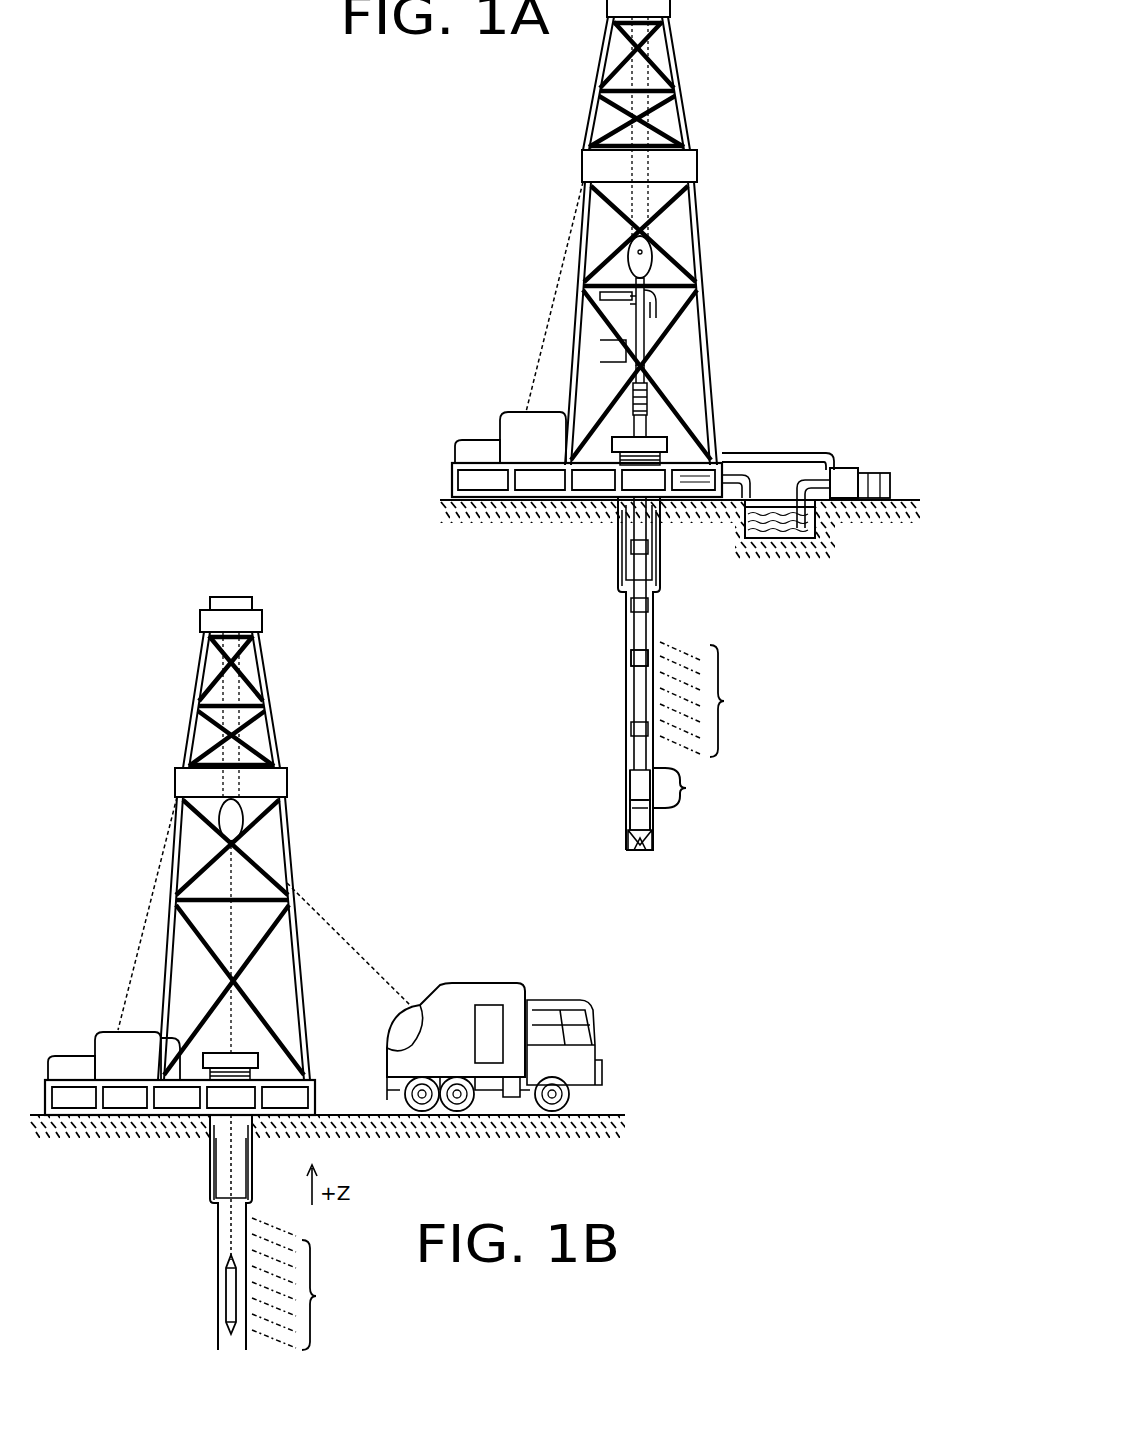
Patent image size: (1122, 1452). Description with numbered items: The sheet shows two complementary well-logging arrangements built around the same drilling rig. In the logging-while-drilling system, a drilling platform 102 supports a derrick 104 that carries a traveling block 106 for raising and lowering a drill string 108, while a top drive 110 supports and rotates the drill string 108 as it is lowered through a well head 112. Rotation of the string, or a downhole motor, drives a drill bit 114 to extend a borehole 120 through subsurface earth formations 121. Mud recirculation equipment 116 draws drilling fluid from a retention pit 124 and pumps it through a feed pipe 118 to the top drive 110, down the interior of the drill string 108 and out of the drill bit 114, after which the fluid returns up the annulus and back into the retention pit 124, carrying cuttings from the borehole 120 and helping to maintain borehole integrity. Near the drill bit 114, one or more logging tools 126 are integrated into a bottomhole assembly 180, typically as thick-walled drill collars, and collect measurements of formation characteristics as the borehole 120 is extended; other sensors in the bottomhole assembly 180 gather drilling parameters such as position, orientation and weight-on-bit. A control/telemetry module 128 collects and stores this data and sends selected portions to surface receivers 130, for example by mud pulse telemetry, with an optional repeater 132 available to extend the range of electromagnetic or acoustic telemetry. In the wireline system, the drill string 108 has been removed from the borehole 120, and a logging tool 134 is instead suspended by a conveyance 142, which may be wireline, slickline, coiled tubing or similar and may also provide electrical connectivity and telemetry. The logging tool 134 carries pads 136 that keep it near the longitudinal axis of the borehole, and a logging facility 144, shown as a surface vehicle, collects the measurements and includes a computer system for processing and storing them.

In FIG. 1A, the drilling platform 102 is at (452, 470).
In FIG. 1B, the drilling platform 102 is at (313, 1090).
In FIG. 1A, the derrick 104 is at (697, 108).
In FIG. 1B, the derrick 104 is at (300, 1046).
In FIG. 1A, the traveling block 106 is at (650, 258).
In FIG. 1B, the traveling block 106 is at (243, 816).
In FIG. 1A, the drill string 108 is at (646, 642).
In FIG. 1A, the top drive 110 is at (642, 325).
In FIG. 1A, the well head 112 is at (656, 432).
In FIG. 1B, the well head 112 is at (246, 1052).
In FIG. 1A, the drill bit 114 is at (628, 838).
In FIG. 1A, the mud recirculation equipment 116 is at (846, 472).
In FIG. 1A, the feed pipe 118 is at (790, 454).
In FIG. 1A, the borehole 120 is at (627, 656).
In FIG. 1A, the subsurface earth formations 121 is at (719, 699).
In FIG. 1B, the subsurface earth formations 121 is at (311, 1284).
In FIG. 1A, the retention pit 124 is at (755, 522).
In FIG. 1A, the logging tools 126 is at (634, 806).
In FIG. 1A, the control/telemetry module 128 is at (634, 790).
In FIG. 1A, the surface receivers 130 is at (641, 378).
In FIG. 1A, the repeater 132 is at (631, 668).
In FIG. 1B, the logging tool 134 is at (228, 1284).
In FIG. 1B, the pads 136 is at (222, 1300).
In FIG. 1B, the conveyance 142 is at (300, 898).
In FIG. 1B, the logging facility 144 is at (455, 986).
In FIG. 1A, the bottomhole assembly 180 is at (684, 799).